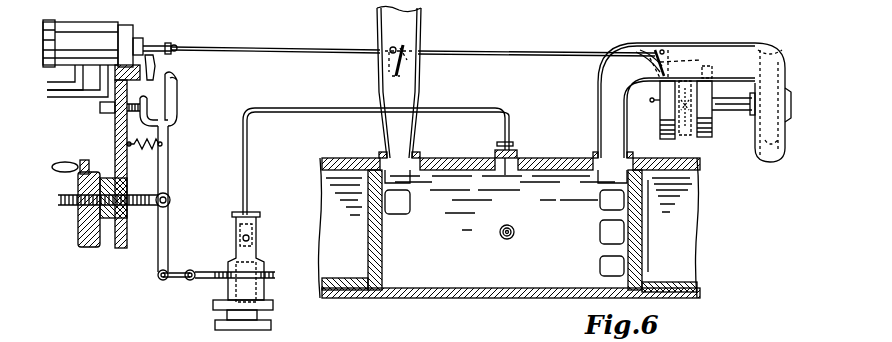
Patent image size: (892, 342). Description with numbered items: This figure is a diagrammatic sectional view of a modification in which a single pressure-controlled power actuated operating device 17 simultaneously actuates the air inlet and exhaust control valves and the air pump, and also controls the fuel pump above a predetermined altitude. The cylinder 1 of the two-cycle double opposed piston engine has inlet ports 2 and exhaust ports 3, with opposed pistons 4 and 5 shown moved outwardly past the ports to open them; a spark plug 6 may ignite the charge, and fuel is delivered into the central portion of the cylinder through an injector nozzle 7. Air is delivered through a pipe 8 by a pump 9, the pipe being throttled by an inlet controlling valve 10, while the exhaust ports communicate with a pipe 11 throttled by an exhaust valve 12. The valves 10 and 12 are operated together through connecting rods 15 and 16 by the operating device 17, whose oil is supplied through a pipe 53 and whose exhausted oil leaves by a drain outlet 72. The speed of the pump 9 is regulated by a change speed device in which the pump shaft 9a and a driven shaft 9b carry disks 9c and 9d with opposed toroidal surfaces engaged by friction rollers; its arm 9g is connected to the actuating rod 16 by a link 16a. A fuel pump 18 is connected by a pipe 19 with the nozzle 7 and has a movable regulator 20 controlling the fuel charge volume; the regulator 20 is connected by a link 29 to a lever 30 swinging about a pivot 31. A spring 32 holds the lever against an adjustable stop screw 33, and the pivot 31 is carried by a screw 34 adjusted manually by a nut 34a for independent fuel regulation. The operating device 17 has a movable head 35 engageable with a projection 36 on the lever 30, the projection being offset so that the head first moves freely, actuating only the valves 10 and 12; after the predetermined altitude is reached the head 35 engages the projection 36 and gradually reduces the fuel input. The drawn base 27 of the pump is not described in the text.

The cylinder 1 is at (540, 170).
The inlet ports 2 is at (597, 192).
The exhaust ports 3 is at (414, 200).
The piston 4 is at (640, 238).
The piston 5 is at (368, 213).
The spark plug 6 is at (511, 237).
The injector nozzle 7 is at (500, 172).
The pipe 8 is at (660, 113).
The pump 9 is at (762, 164).
The pump shaft 9a is at (718, 110).
The driven shaft 9b is at (665, 112).
The disk 9c is at (706, 138).
The disk 9d is at (686, 135).
The arm 9g is at (702, 60).
The valve 10 is at (640, 62).
The pipe 11 is at (424, 32).
The valve 12 is at (410, 72).
The connecting rod 15 is at (266, 50).
The connecting rod 16 is at (553, 52).
The link 16a is at (668, 50).
The operating device 17 is at (81, 30).
The fuel pump 18 is at (258, 258).
The pipe 19 is at (290, 110).
The regulator 20 is at (210, 282).
The valve base 27 is at (268, 314).
The link 29 is at (180, 272).
The lever 30 is at (168, 128).
The pivot 31 is at (172, 198).
The spring 32 is at (168, 158).
The stop member 33 is at (112, 114).
The screw 34 is at (148, 212).
The nut 34a is at (90, 242).
The movable head 35 is at (154, 62).
The projection 36 is at (174, 90).
The pipe 53 is at (84, 98).
The drain outlet 72 is at (65, 96).